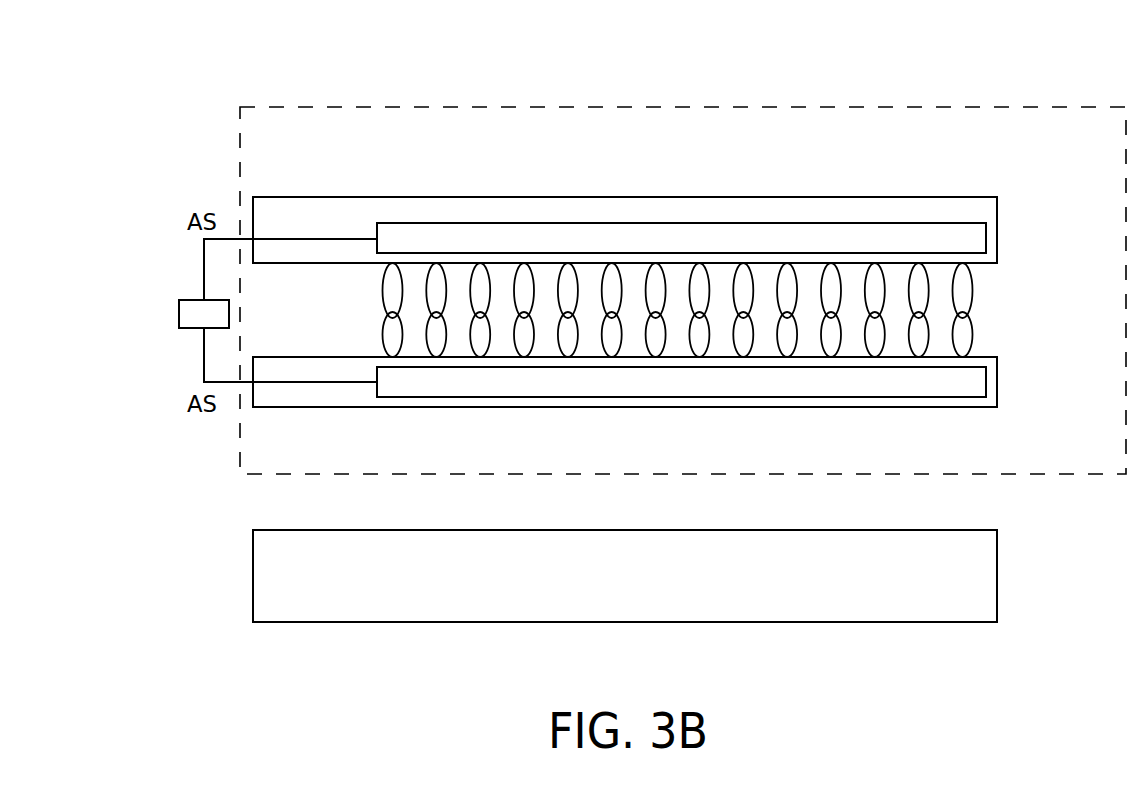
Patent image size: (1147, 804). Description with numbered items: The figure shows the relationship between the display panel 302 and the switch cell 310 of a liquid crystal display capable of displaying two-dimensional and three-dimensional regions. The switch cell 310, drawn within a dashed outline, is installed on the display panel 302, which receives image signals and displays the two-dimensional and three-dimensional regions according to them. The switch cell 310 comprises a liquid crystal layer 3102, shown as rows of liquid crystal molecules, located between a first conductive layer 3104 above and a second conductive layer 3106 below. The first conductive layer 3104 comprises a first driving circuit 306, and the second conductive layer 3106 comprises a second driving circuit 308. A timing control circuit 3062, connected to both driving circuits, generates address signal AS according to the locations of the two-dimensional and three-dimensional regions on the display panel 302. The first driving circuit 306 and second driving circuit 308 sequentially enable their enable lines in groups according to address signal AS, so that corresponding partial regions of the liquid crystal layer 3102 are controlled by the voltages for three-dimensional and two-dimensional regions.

The switch cell 310 is at (1047, 107).
The first conductive layer 3104 is at (920, 197).
The first driving circuit 306 is at (655, 238).
The liquid crystal layer 3102 is at (1008, 263).
The second driving circuit 308 is at (655, 385).
The second conductive layer 3106 is at (903, 408).
The timing control circuit 3062 is at (192, 300).
The display panel 302 is at (935, 622).